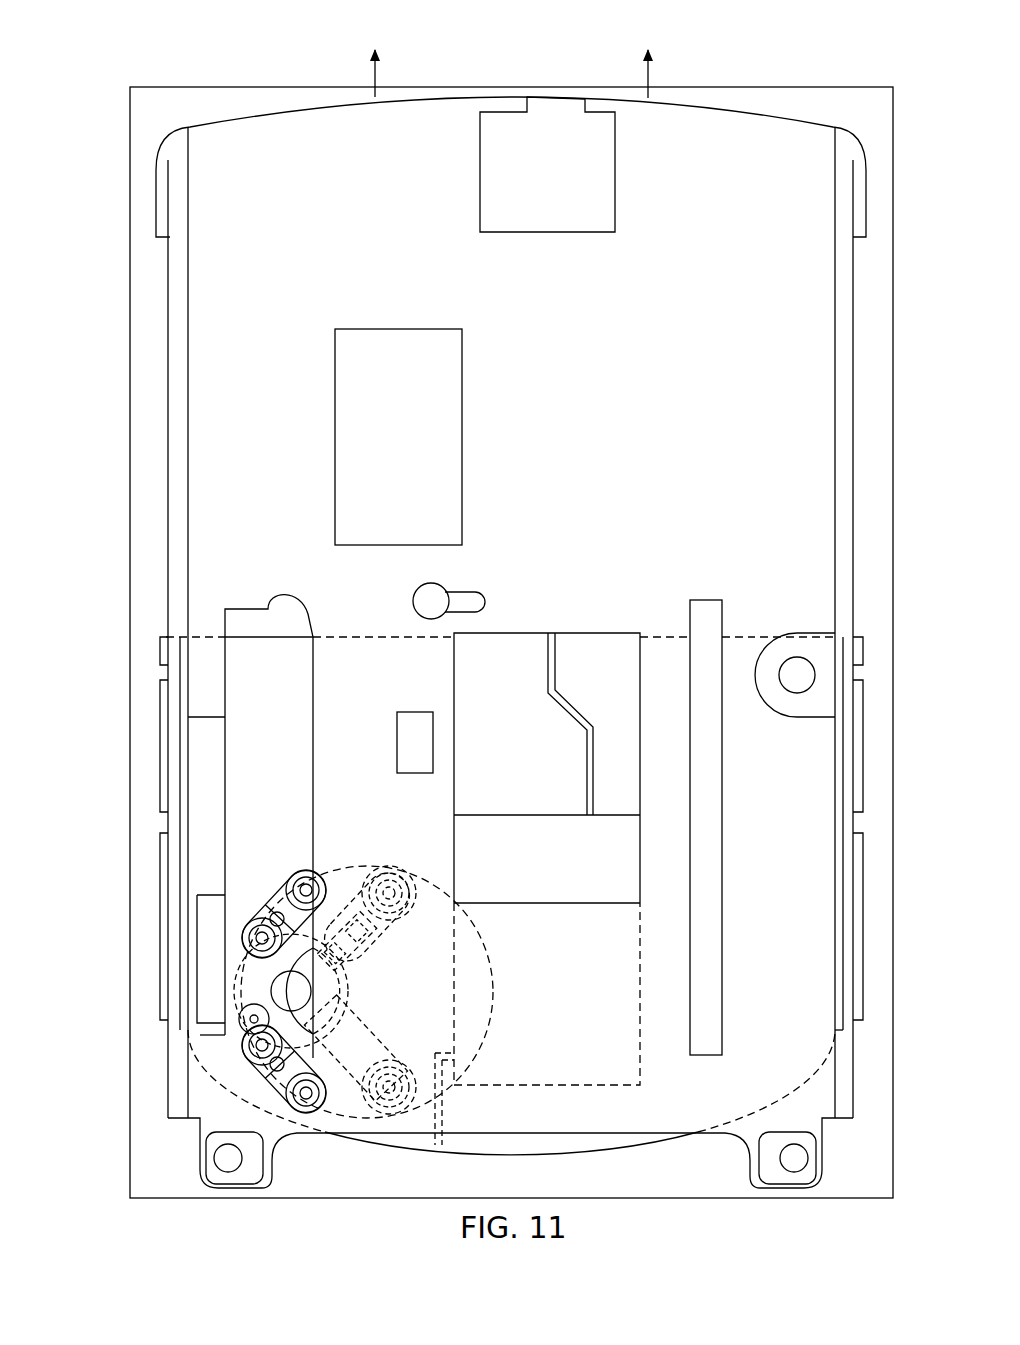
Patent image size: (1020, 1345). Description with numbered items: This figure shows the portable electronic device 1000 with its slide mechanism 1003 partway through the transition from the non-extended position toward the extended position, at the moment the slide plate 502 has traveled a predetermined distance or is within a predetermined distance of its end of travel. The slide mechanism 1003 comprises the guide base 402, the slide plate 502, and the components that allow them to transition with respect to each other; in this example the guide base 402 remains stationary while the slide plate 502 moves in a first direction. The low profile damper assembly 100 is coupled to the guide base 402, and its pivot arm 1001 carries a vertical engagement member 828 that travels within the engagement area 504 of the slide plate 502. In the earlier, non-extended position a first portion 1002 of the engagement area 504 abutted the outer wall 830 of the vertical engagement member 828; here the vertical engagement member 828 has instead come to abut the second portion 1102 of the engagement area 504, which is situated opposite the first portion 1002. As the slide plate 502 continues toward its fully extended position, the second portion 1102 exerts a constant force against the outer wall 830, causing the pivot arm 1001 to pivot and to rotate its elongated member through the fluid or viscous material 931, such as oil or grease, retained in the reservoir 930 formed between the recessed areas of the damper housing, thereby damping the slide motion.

The portable electronic device 1000 is at (130, 468).
The slide plate 502 is at (293, 112).
The slide mechanism 1003 is at (158, 619).
The guide base 402 is at (356, 636).
The first portion of the engagement area 1002 is at (250, 604).
The engagement area 504 is at (291, 822).
The low profile damper assembly 100 is at (415, 978).
The outer wall 830 is at (230, 1012).
The second portion of the engagement area 1102 is at (228, 1044).
The vertical engagement member 828 is at (253, 1027).
The reservoir 930 is at (385, 968).
The fluid or viscous material 931 is at (385, 1000).
The pivot arm 1001 is at (348, 966).